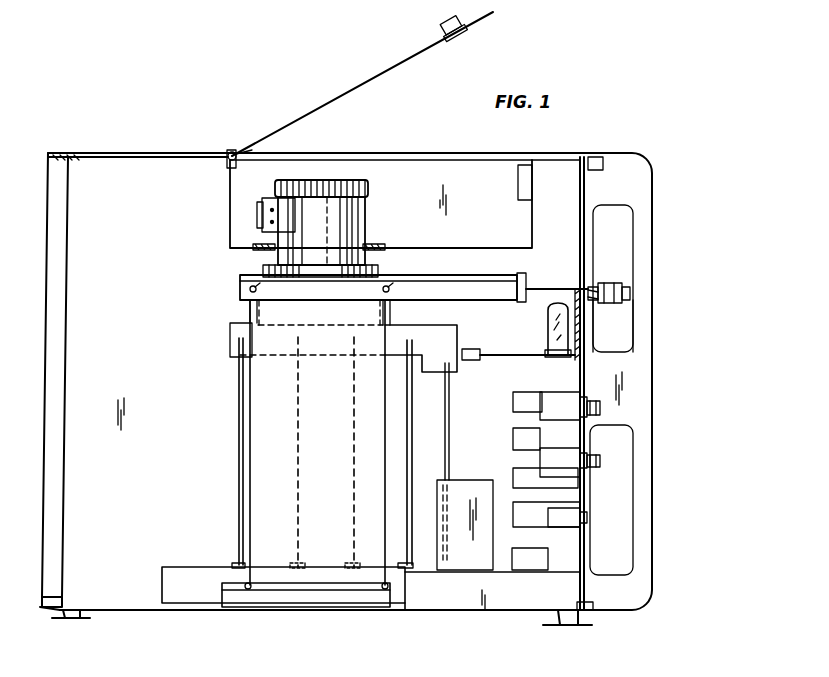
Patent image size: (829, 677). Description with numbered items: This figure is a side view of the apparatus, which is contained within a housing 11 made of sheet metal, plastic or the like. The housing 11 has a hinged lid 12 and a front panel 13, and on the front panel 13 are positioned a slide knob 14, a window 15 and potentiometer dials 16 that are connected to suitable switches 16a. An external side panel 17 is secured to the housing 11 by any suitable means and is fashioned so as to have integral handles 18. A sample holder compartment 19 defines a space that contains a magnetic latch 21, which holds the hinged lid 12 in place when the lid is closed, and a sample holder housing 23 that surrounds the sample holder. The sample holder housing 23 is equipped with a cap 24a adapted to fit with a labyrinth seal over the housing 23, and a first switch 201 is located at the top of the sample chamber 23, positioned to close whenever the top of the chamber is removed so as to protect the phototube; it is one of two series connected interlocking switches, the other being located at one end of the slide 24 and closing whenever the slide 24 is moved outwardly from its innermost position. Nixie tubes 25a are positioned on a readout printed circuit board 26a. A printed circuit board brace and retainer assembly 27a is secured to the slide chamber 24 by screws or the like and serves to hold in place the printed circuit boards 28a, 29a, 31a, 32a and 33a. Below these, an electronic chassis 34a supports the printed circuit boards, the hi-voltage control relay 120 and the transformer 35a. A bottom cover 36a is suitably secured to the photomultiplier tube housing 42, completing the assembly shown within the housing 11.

The housing 11 is at (70, 342).
The hinged lid 12 is at (378, 75).
The front panel 13 is at (585, 190).
The slide knob 14 is at (608, 283).
The window 15 is at (585, 332).
The potentiometer dials 16 is at (600, 460).
The switches 16a is at (513, 488).
The external side panel 17 is at (652, 240).
The integral handles 18 is at (622, 500).
The sample holder compartment 19 is at (468, 177).
The magnetic latch 21 is at (518, 188).
The sample holder housing 23 is at (349, 220).
The slide chamber 24 is at (240, 277).
The cap 24a is at (340, 181).
The Nixie tubes 25a is at (552, 312).
The readout printed circuit board 26a is at (530, 360).
The printed circuit board brace and retainer assembly 27a is at (230, 340).
The printed circuit board 28a is at (239, 478).
The printed circuit board 29a is at (298, 413).
The printed circuit board 31a is at (352, 500).
The printed circuit board 32a is at (408, 428).
The printed circuit board 33a is at (447, 432).
The electronic chassis 34a is at (213, 567).
The transformer 35a is at (478, 560).
The bottom cover 36a is at (345, 598).
The photomultiplier tube housing 42 is at (250, 433).
The hi-voltage control relay 120 is at (538, 570).
The first switch 201 is at (266, 215).